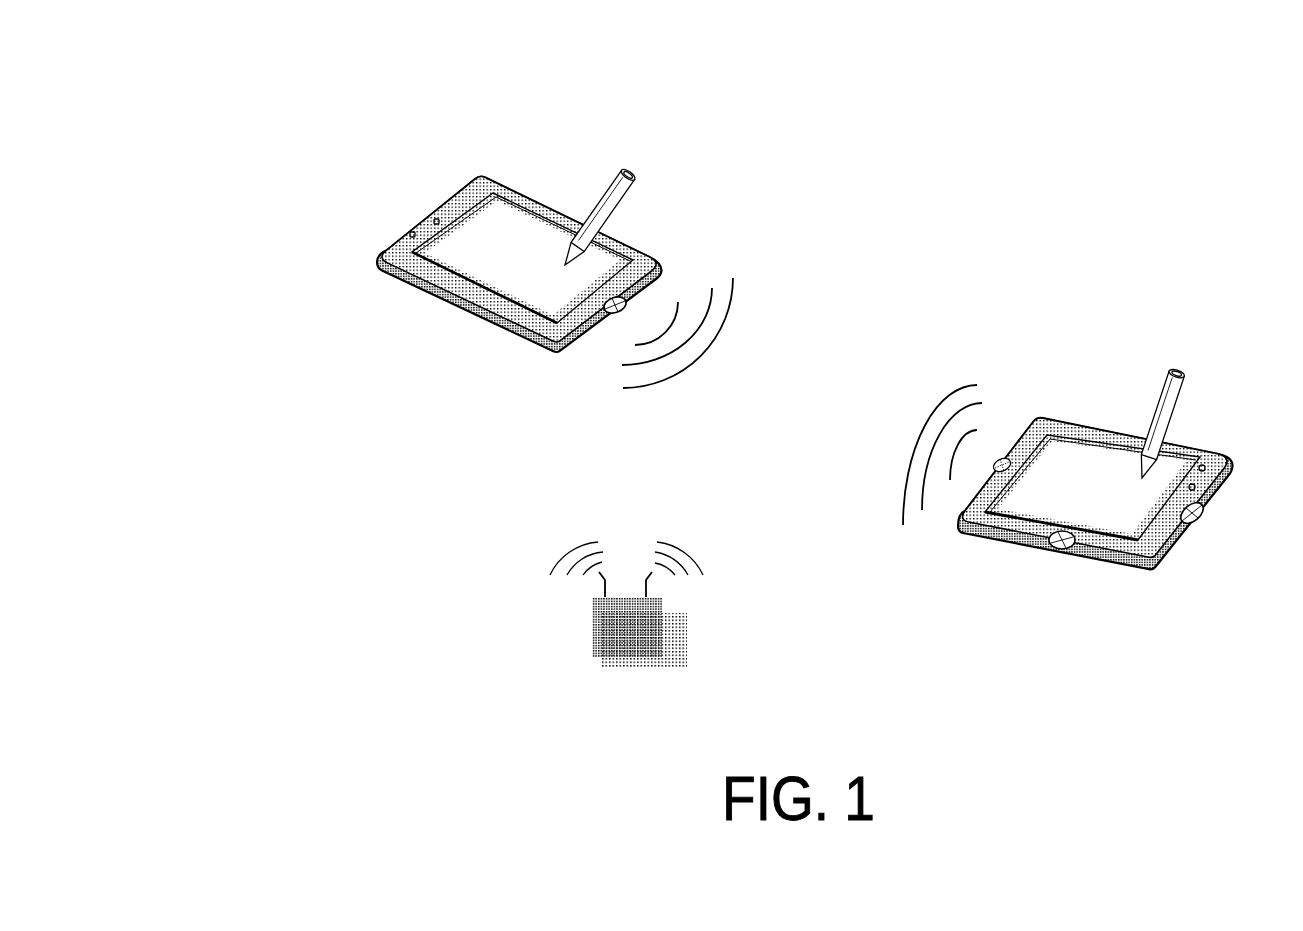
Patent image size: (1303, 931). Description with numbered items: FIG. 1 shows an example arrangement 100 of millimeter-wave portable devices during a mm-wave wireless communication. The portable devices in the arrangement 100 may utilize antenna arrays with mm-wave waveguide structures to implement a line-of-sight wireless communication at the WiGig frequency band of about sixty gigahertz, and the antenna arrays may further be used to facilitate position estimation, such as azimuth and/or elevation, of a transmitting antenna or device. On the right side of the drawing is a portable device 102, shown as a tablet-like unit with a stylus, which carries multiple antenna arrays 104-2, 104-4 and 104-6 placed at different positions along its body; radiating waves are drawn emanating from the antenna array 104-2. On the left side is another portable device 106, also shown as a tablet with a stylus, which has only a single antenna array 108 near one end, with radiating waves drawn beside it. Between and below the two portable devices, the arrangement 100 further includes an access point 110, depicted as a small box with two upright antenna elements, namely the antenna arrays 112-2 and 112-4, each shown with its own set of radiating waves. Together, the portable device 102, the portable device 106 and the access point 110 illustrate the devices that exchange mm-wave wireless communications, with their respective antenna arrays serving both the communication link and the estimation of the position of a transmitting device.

The arrangement 100 is at (300, 82).
The portable device 102 is at (1192, 328).
The antenna array 104-2 is at (1005, 455).
The antenna array 104-4 is at (1052, 549).
The antenna array 104-6 is at (1206, 507).
The portable device 106 is at (418, 183).
The antenna array 108 is at (626, 297).
The access point 110 is at (563, 657).
The antenna array 112-2 is at (655, 582).
The antenna array 112-4 is at (608, 573).